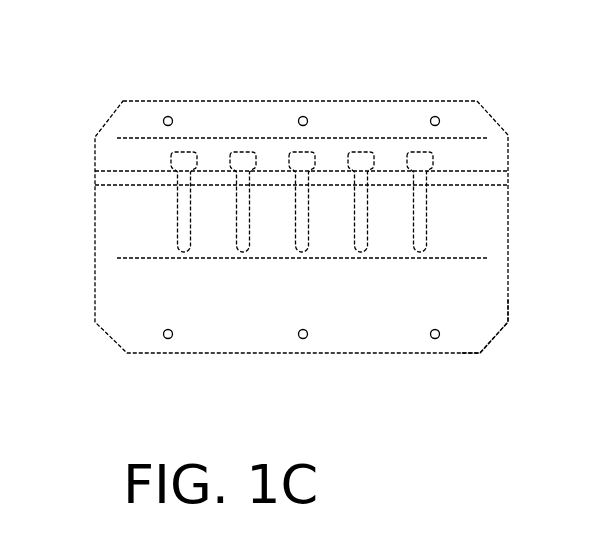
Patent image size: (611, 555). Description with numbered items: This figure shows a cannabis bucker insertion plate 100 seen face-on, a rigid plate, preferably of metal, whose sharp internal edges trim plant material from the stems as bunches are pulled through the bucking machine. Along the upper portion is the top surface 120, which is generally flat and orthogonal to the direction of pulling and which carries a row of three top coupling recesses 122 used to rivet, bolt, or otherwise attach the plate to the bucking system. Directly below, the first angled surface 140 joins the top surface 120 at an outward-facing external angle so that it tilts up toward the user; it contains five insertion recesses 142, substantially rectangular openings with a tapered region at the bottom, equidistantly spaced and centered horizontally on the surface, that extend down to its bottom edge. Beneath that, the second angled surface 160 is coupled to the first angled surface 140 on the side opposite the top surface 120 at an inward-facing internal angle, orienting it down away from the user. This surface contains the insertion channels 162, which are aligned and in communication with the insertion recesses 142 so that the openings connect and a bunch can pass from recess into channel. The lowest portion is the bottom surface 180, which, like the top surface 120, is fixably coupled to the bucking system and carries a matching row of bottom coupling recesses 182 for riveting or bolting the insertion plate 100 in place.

The insertion plate 100 is at (470, 72).
The top surface 120 is at (466, 113).
The top coupling recesses 122 is at (302, 118).
The first angled surface 140 is at (503, 159).
The insertion recesses 142 is at (244, 158).
The second angled surface 160 is at (462, 225).
The insertion channels 162 is at (243, 203).
The bottom surface 180 is at (492, 316).
The bottom coupling recesses 182 is at (438, 338).